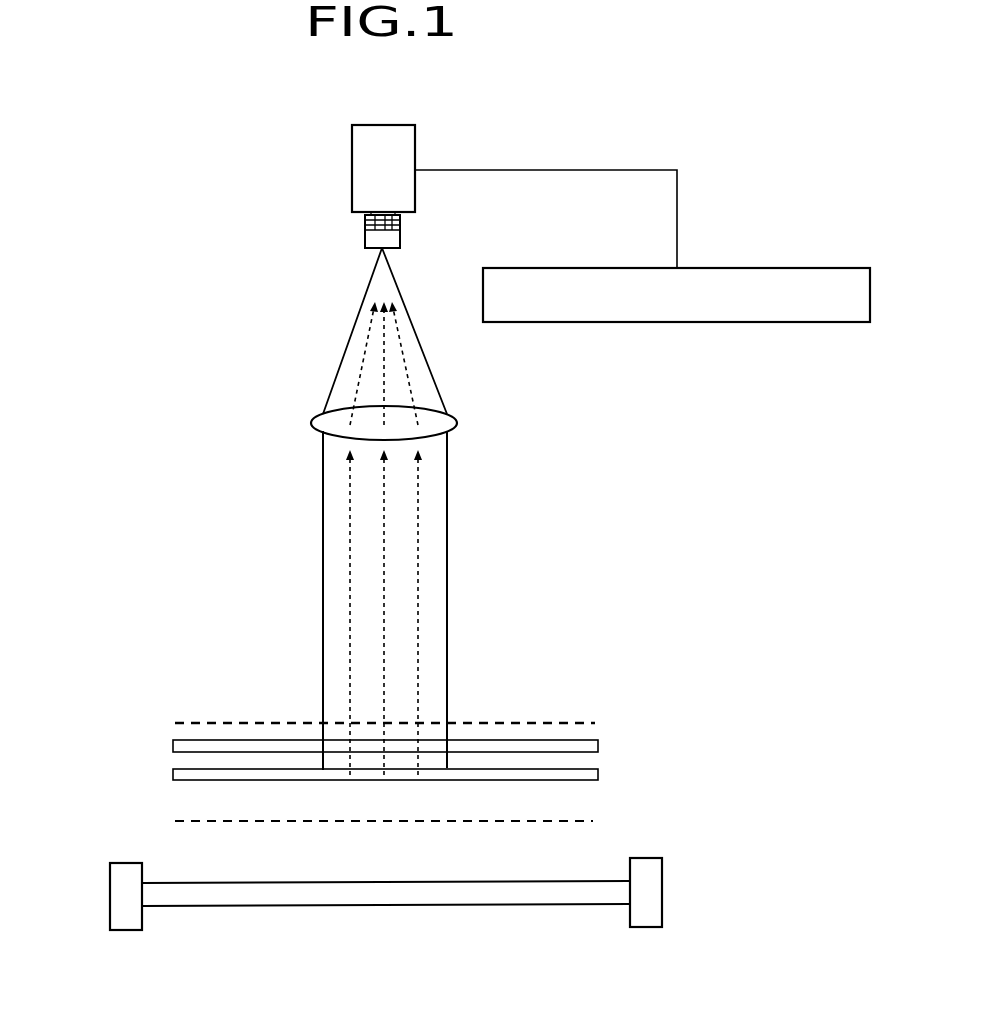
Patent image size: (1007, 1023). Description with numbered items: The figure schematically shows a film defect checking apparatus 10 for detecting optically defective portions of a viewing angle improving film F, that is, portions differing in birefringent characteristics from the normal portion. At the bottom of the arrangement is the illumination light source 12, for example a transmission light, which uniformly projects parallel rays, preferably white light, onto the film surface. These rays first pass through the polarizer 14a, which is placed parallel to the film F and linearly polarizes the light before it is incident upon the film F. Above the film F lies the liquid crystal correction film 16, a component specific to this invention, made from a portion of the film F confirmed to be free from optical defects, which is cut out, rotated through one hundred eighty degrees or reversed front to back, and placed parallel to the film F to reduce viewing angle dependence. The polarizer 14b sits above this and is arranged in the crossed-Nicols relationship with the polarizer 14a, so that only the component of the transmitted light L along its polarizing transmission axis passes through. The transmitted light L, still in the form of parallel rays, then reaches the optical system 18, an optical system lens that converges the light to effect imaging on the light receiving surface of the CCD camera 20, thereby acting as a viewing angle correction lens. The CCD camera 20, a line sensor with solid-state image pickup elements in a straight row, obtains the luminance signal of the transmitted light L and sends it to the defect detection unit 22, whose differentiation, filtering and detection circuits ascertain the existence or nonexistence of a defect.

The film defect checking apparatus 10 is at (572, 100).
The illumination light source 12 is at (432, 902).
The polarizer 14a is at (592, 821).
The polarizer 14b is at (557, 723).
The liquid crystal correction film 16 is at (598, 743).
The optical system 18 is at (313, 425).
The CCD camera 20 is at (352, 170).
The defect detection unit 22 is at (680, 322).
The film F is at (173, 775).
The transmitted light L is at (418, 578).